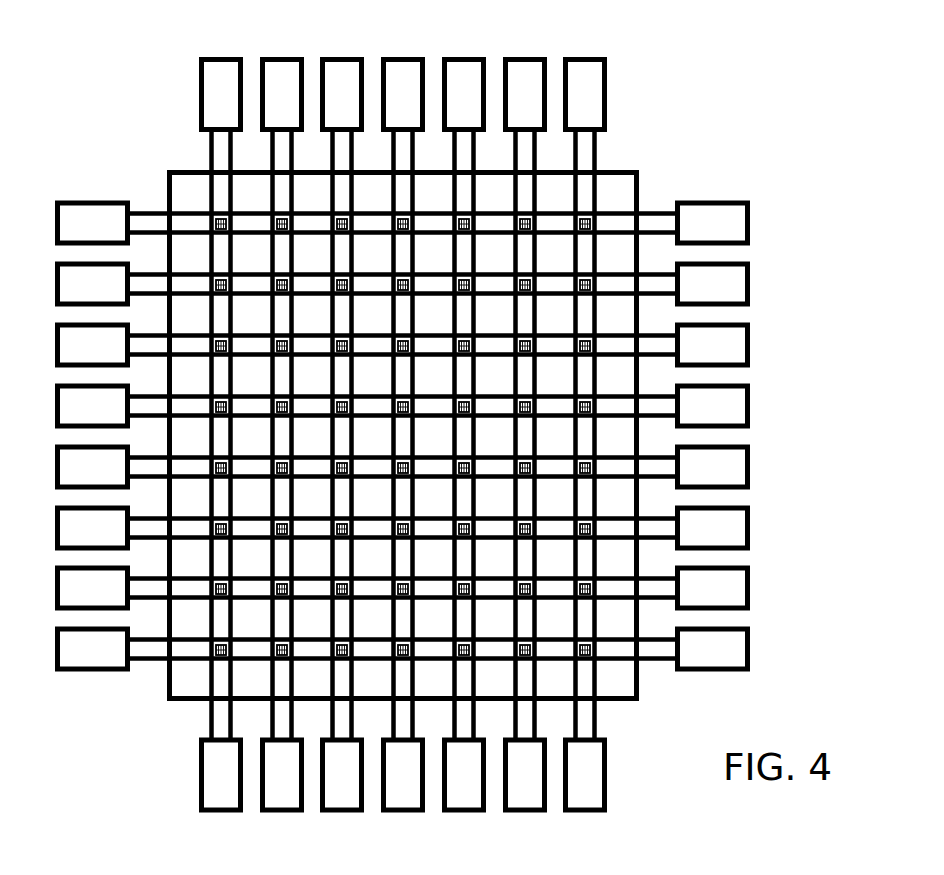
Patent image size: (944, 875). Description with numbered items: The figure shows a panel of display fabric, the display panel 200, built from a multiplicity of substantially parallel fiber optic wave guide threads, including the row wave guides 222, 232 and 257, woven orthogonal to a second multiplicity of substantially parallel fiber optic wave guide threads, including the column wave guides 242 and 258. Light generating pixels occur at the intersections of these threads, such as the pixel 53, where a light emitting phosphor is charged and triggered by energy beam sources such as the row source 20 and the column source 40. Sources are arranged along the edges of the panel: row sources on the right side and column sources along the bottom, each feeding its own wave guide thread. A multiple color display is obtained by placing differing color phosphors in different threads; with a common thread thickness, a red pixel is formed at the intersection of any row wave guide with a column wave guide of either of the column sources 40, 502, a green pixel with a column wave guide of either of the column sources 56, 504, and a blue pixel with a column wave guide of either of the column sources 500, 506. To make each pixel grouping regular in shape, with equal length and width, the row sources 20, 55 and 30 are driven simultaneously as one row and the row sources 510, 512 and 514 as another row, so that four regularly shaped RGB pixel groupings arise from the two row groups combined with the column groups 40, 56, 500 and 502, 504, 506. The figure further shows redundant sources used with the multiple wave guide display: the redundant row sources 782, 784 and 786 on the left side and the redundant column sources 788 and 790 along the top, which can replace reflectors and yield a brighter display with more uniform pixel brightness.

The display panel 200 is at (638, 171).
The pixel 53 is at (279, 279).
The fiber optic wave guide 242 is at (270, 152).
The fiber optic wave guide 258 is at (331, 150).
The fiber optic wave guide 222 is at (657, 274).
The fiber optic wave guide 257 is at (657, 335).
The fiber optic wave guide 232 is at (657, 396).
The redundant column source 790 is at (282, 95).
The redundant column source 788 is at (342, 95).
The redundant row source 782 is at (93, 284).
The redundant row source 784 is at (93, 345).
The redundant row source 786 is at (93, 406).
The row source 20 is at (713, 284).
The row source 55 is at (713, 345).
The row source 30 is at (713, 406).
The row source 510 is at (713, 467).
The row source 512 is at (713, 528).
The row source 514 is at (713, 588).
The column source 40 is at (282, 775).
The column source 56 is at (342, 775).
The column source 500 is at (403, 775).
The column source 502 is at (464, 775).
The column source 504 is at (525, 775).
The column source 506 is at (585, 775).